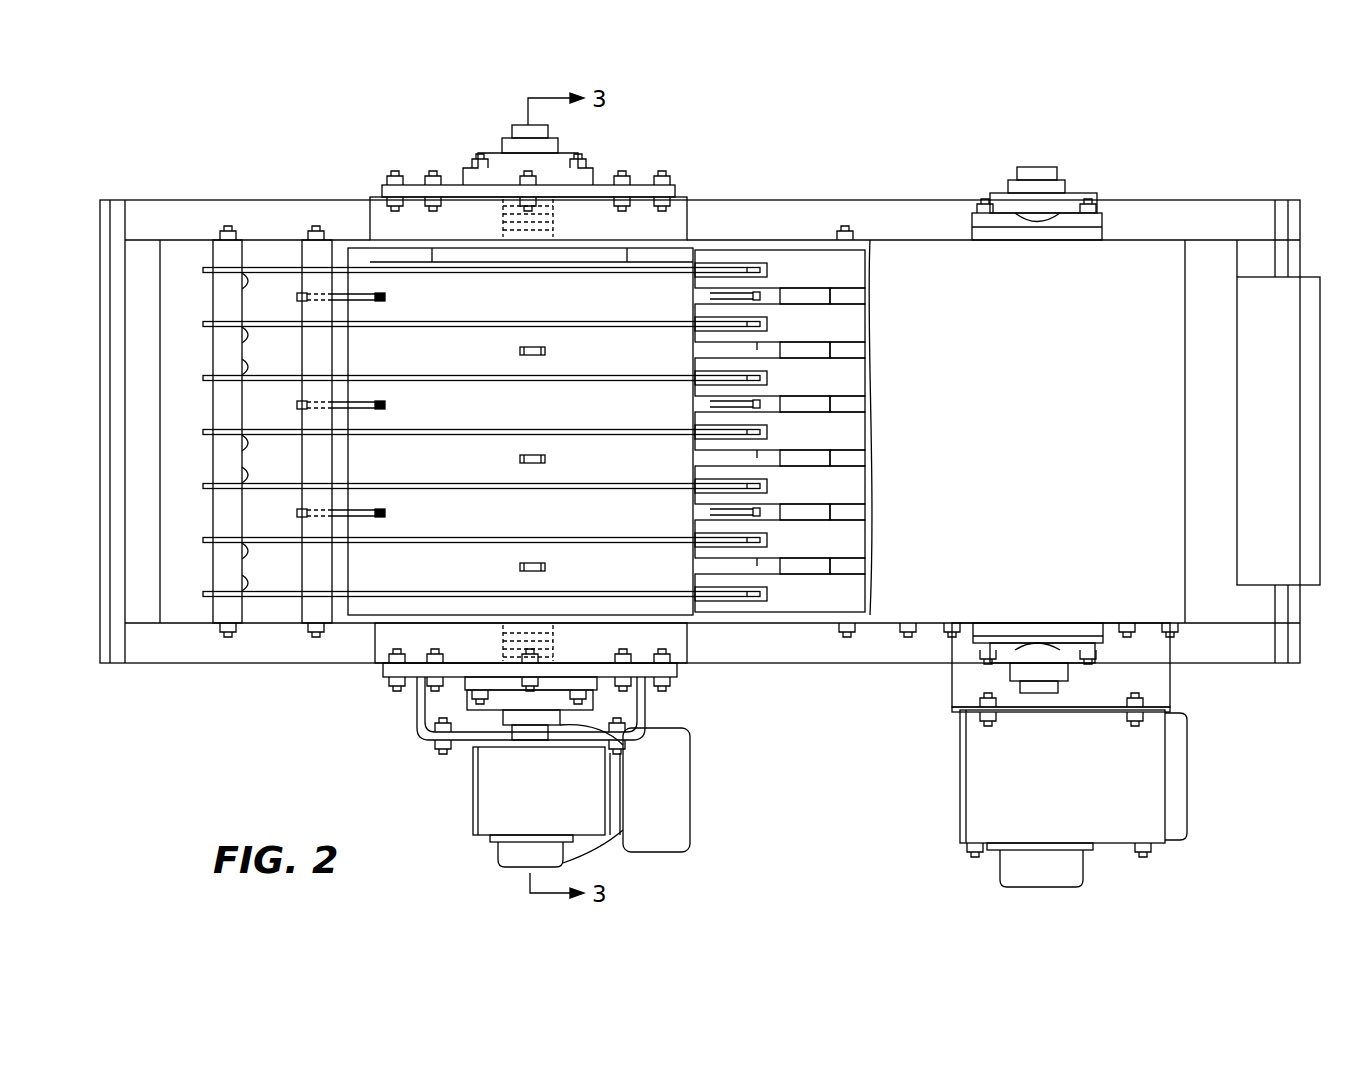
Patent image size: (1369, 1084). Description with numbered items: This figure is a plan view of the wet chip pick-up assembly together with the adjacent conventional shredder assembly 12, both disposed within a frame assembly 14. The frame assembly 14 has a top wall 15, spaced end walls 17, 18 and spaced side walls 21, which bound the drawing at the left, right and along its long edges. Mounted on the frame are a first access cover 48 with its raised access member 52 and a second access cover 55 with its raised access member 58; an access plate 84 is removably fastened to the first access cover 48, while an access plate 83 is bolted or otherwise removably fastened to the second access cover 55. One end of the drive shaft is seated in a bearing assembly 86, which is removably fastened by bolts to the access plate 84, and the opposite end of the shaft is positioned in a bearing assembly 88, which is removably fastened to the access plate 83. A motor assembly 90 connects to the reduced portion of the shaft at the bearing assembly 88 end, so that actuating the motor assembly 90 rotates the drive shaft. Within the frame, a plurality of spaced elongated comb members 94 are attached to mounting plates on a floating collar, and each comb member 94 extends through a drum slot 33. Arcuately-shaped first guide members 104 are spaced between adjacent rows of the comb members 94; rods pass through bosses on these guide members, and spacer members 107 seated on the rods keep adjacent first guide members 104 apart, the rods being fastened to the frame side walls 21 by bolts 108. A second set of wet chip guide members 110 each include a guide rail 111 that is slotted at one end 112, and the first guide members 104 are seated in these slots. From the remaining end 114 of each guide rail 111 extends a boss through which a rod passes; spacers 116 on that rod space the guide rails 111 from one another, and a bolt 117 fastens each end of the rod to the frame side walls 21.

The shredder assembly 12 is at (1100, 650).
The frame assembly 14 is at (1172, 262).
The top wall 15 is at (930, 256).
The end wall 17 is at (100, 612).
The end wall 18 is at (1302, 222).
The side wall 21 is at (1126, 232).
The slot 33 is at (388, 293).
The first access cover 48 is at (275, 238).
The raised access member 52 is at (688, 213).
The second access cover 55 is at (376, 645).
The raised access member 58 is at (758, 626).
The access plate 83 is at (677, 672).
The access plate 84 is at (386, 190).
The bearing assembly 86 is at (504, 137).
The bearing assembly 88 is at (470, 690).
The motor assembly 90 is at (690, 802).
The comb member 94 is at (332, 297).
The first guide member 104 is at (244, 282).
The spacer member 107 is at (218, 310).
The bolt 108 is at (228, 226).
The second guide member 110 is at (790, 266).
The guide rail 111 is at (828, 527).
The slotted end 112 is at (696, 290).
The remaining end 114 is at (868, 310).
The spacer 116 is at (862, 508).
The bolt 117 is at (845, 226).